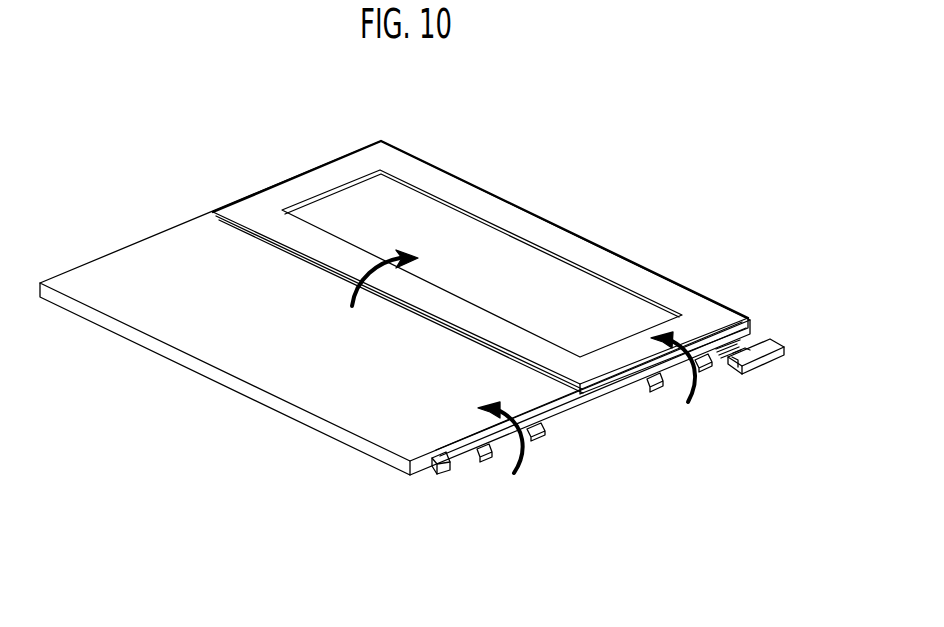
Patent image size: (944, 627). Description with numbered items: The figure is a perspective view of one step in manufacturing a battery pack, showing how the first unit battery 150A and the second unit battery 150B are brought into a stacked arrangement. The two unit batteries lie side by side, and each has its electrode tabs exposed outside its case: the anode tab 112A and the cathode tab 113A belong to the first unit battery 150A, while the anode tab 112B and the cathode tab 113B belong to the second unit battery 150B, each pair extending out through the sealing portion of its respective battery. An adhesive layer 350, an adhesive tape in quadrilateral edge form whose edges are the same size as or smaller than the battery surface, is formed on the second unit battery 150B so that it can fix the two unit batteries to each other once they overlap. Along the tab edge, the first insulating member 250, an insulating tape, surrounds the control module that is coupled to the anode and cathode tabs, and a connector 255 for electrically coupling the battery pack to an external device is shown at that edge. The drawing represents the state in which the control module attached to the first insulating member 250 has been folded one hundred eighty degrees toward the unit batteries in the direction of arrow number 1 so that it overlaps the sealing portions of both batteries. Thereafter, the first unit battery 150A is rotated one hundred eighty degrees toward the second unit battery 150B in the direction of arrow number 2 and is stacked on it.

The first unit battery 150A is at (146, 268).
The second unit battery 150B is at (364, 216).
The adhesive layer 350 is at (583, 233).
The connector 255 is at (784, 339).
The first insulating member 250 is at (444, 470).
The anode tab 112A is at (538, 434).
The anode tab 112B is at (704, 369).
The cathode tab 113A is at (485, 456).
The cathode tab 113B is at (655, 384).
The arrow number 1 is at (494, 410).
The arrow number 2 is at (345, 304).